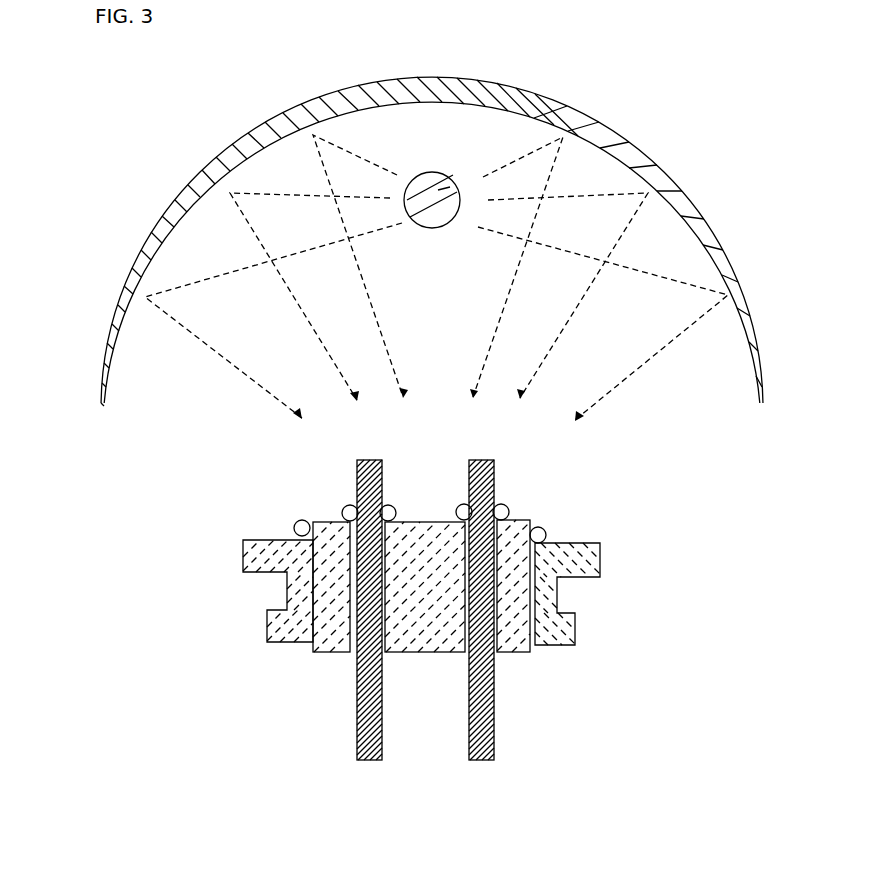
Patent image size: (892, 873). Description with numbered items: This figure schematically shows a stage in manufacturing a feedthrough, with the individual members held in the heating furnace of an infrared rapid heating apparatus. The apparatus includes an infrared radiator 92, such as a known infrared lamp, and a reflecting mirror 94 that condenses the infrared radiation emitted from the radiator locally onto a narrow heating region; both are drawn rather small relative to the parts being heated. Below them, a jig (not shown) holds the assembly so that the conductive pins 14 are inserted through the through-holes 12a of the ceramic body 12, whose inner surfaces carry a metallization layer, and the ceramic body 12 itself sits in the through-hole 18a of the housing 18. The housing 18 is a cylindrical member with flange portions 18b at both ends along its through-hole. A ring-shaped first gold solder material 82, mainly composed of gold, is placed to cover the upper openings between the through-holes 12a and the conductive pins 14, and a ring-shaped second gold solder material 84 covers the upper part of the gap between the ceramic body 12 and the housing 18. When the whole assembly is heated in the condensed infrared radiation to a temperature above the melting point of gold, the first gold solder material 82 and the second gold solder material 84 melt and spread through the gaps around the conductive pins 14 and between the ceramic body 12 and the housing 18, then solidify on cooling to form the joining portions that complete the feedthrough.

The ceramic body 12 is at (443, 547).
The through-holes 12a is at (363, 543).
The conductive pins 14 is at (381, 496).
The housing 18 is at (557, 592).
The through-hole 18a is at (517, 543).
The flange portions 18b is at (567, 562).
The first gold solder material 82 is at (392, 513).
The second gold solder material 84 is at (541, 535).
The infrared radiator 92 is at (455, 193).
The reflecting mirror 94 is at (603, 137).